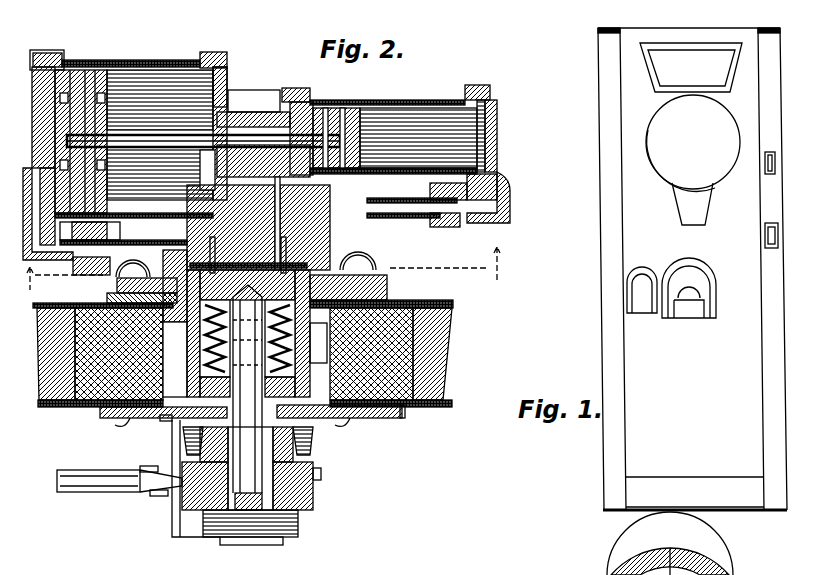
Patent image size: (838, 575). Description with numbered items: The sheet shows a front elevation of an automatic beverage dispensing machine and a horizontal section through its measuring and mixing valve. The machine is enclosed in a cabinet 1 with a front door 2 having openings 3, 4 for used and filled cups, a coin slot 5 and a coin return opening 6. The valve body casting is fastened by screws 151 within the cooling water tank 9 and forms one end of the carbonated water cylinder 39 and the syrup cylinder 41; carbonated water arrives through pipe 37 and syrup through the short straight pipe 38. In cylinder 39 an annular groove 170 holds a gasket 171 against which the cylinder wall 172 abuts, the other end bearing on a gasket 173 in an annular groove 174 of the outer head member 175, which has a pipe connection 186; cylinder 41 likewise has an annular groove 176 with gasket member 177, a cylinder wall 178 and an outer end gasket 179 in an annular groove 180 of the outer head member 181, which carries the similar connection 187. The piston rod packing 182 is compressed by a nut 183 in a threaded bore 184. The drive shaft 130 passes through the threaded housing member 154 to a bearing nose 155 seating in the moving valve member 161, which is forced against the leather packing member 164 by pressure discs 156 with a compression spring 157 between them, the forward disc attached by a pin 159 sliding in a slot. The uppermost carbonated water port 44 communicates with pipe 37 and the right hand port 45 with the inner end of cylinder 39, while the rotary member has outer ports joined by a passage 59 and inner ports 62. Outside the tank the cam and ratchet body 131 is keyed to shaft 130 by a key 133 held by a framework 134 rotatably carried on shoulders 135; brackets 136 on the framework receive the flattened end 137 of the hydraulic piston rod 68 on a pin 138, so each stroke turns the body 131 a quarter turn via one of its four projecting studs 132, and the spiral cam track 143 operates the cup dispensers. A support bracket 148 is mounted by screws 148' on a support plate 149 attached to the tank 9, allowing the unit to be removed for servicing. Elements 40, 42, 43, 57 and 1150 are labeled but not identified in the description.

In FIG. 1, the cabinet 1 is at (605, 170).
In FIG. 1, the front door 2 is at (632, 343).
In FIG. 2, the opening 3 is at (265, 273).
In FIG. 1, the opening 3 is at (645, 270).
In FIG. 1, the opening 4 is at (690, 275).
In FIG. 1, the coin slot 5 is at (763, 167).
In FIG. 1, the coin return opening 6 is at (763, 243).
In FIG. 2, the cooling water tank 9 is at (55, 413).
In FIG. 2, the pipe 37 is at (230, 574).
In FIG. 2, the short straight pipe 38 is at (326, 567).
In FIG. 2, the carbonated water cylinder 39 is at (158, 55).
In FIG. 2, the coil 40 is at (90, 163).
In FIG. 2, the syrup cylinder 41 is at (435, 94).
In FIG. 2, the coil 42 is at (360, 148).
In FIG. 2, the pin 43 is at (200, 235).
In FIG. 2, the uppermost carbonated water port 44 is at (163, 263).
In FIG. 2, the right hand port 45 is at (318, 265).
In FIG. 1, the shaft 57 is at (672, 550).
In FIG. 1, the passage 59 is at (628, 563).
In FIG. 1, the inner ports 62 is at (706, 560).
In FIG. 2, the hydraulic piston rod 68 is at (95, 492).
In FIG. 2, the drive shaft 130 is at (300, 443).
In FIG. 2, the body member 131 is at (172, 540).
In FIG. 2, the projecting studs 132 is at (150, 478).
In FIG. 2, the key 133 is at (283, 517).
In FIG. 2, the framework 134 is at (172, 530).
In FIG. 2, the shoulders 135 is at (275, 545).
In FIG. 2, the brackets 136 is at (252, 389).
In FIG. 2, the flattened end 137 is at (140, 472).
In FIG. 2, the pin 138 is at (148, 494).
In FIG. 2, the spiral cam track 143 is at (316, 468).
In FIG. 2, the support bracket 148 is at (256, 441).
In FIG. 2, the screws 148' is at (378, 431).
In FIG. 2, the support plate 149 is at (402, 408).
In FIG. 2, the screws 151 is at (99, 304).
In FIG. 2, the threaded housing member 154 is at (160, 420).
In FIG. 2, the bearing nose 155 is at (378, 270).
In FIG. 2, the pressure discs 156 is at (406, 282).
In FIG. 2, the compression spring 157 is at (420, 306).
In FIG. 2, the pin 159 is at (395, 345).
In FIG. 2, the moving valve member 161 is at (215, 205).
In FIG. 2, the packing member 164 is at (283, 262).
In FIG. 2, the annular groove 170 is at (228, 62).
In FIG. 2, the gasket 171 is at (228, 76).
In FIG. 2, the cylinder wall 172 is at (183, 61).
In FIG. 2, the gasket 173 is at (84, 70).
In FIG. 2, the annular groove 174 is at (64, 53).
In FIG. 2, the outer head member 175 is at (44, 44).
In FIG. 2, the annular groove 176 is at (300, 88).
In FIG. 2, the gasket member 177 is at (305, 100).
In FIG. 2, the cylinder wall 178 is at (368, 105).
In FIG. 2, the outer end gasket 179 is at (482, 85).
In FIG. 2, the annular groove 180 is at (492, 95).
In FIG. 2, the outer head member 181 is at (497, 140).
In FIG. 2, the piston rod packing 182 is at (253, 108).
In FIG. 2, the nut 183 is at (225, 152).
In FIG. 2, the threaded bore 184 is at (215, 139).
In FIG. 2, the pipe connection 186 is at (123, 233).
In FIG. 2, the pipe connection 187 is at (385, 215).
In FIG. 2, the tube 1150 is at (440, 206).